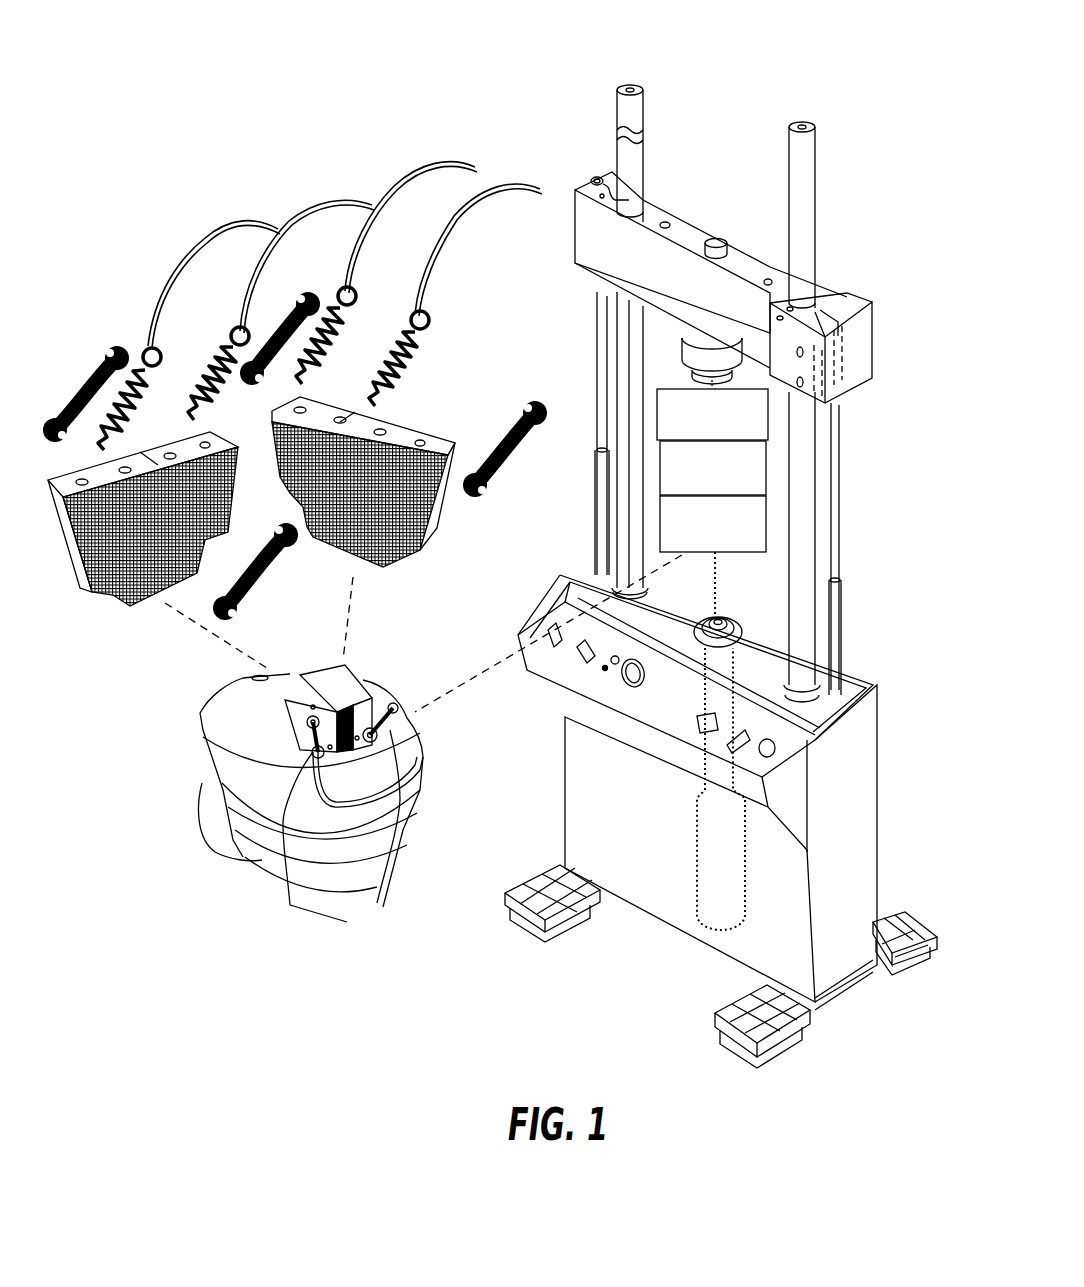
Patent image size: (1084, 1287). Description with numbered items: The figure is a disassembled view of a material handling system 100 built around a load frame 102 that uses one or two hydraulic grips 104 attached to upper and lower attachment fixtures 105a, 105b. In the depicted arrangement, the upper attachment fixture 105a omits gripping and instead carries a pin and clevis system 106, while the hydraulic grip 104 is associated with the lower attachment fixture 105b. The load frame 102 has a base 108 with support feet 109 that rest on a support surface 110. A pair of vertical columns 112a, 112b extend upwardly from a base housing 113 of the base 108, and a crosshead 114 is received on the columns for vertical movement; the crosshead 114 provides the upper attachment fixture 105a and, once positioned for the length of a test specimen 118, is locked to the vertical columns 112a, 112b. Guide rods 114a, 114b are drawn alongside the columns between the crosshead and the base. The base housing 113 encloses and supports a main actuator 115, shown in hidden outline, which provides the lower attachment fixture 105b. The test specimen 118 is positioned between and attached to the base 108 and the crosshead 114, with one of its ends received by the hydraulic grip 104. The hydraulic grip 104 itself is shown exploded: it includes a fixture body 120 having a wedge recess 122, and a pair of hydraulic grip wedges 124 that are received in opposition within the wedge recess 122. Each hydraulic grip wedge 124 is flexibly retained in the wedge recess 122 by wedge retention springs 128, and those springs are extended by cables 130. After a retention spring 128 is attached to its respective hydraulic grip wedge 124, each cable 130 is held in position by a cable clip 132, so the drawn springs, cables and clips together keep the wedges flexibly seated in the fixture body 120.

The material handling system 100 is at (90, 110).
The load frame 102 is at (572, 176).
The hydraulic grip 104 is at (192, 714).
The upper attachment fixture 105a is at (686, 353).
The lower attachment fixture 105b is at (735, 620).
The pin and clevis system 106 is at (712, 414).
The base 108 is at (877, 673).
The support feet 109 is at (887, 908).
The support surface 110 is at (657, 966).
The vertical column 112a is at (645, 163).
The vertical column 112b is at (815, 222).
The base housing 113 is at (880, 797).
The crosshead 114 is at (741, 258).
The first guide rod 114a is at (598, 330).
The second guide rod 114b is at (840, 510).
The main actuator 115 is at (697, 878).
The test specimen 118 is at (713, 528).
The fixture body 120 is at (262, 860).
The wedge recess 122 is at (347, 782).
The hydraulic grip wedge 124 is at (73, 595).
The wedge retention spring 128 is at (148, 345).
The cable 130 is at (230, 222).
The cable clip 132 is at (78, 387).